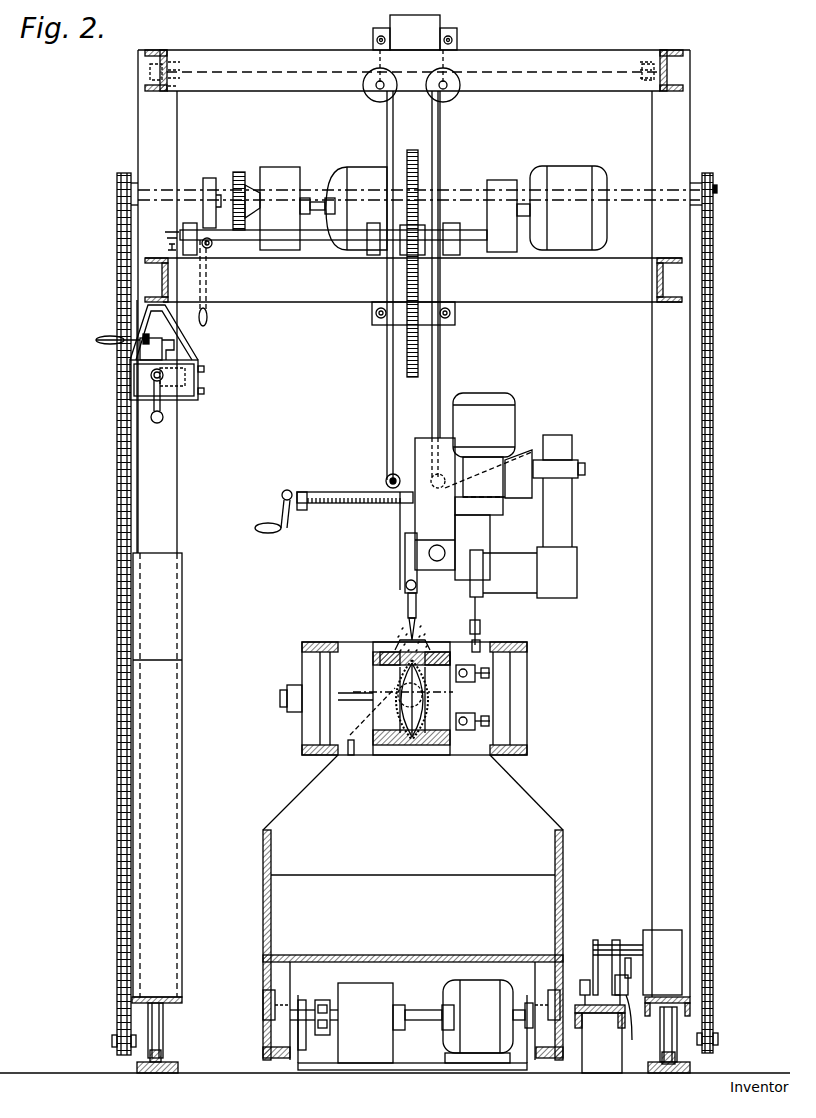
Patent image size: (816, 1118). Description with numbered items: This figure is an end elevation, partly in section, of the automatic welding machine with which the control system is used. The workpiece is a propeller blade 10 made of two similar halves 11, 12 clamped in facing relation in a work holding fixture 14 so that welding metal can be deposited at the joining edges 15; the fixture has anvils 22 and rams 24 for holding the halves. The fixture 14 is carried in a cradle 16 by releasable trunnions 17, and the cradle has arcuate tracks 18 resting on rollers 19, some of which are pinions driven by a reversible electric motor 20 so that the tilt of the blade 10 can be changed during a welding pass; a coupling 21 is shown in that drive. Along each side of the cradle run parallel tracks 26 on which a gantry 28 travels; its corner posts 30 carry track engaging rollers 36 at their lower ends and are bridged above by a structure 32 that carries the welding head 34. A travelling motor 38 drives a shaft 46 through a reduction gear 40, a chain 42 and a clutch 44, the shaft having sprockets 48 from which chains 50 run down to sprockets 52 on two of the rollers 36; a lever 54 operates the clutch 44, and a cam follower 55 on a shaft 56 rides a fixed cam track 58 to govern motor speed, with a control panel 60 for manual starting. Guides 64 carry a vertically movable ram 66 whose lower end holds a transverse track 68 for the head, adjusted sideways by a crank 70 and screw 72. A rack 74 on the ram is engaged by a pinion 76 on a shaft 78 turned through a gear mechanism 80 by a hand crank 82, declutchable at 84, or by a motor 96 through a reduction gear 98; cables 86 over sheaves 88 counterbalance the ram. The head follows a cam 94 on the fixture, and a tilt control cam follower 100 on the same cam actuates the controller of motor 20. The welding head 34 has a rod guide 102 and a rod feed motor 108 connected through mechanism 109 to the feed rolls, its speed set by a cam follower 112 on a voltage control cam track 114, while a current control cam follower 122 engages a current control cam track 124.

The propeller blade 10 is at (400, 641).
The blade half 11 is at (398, 748).
The blade half 12 is at (426, 748).
The work holding fixture 14 is at (528, 713).
The joining edges 15 is at (412, 753).
The cradle 16 is at (272, 916).
The fixture-holding releasable trunnions 17 is at (414, 709).
The arcuate tracks 18 is at (265, 1046).
The rollers 19 is at (263, 998).
The controllable reversible electric motor 20 is at (452, 992).
The coupling 21 is at (322, 1000).
The anvils 22 is at (380, 656).
The rams 24 is at (352, 697).
The parallel tracks 26 is at (155, 1073).
The gantry 28 is at (180, 472).
The corner posts 30 is at (177, 510).
The structure 32 is at (529, 58).
The welding head 34 is at (399, 567).
The track engaging rollers 36 is at (165, 1045).
The travelling motor 38 is at (360, 168).
The reduction gear 40 is at (282, 169).
The chain 42 is at (241, 174).
The clutch 44 is at (222, 176).
The shaft 46 is at (188, 190).
The sprockets 48 is at (120, 172).
The chains 50 is at (116, 293).
The sprockets 52 is at (120, 1046).
The lever 54 is at (208, 316).
The cam follower 55 is at (585, 980).
The shaft 56 is at (628, 945).
The cam track 58 is at (585, 1001).
The control panel 60 is at (170, 716).
The guides 64 is at (372, 33).
The vertically movable ram 66 is at (441, 137).
The transverse track 68 is at (357, 489).
The crank 70 is at (277, 531).
The screw 72 is at (334, 498).
The rack 74 is at (406, 363).
The pinion 76 is at (402, 243).
The shaft 78 is at (468, 234).
The gear mechanism 80 is at (150, 375).
The hand crank 82 is at (165, 418).
The declutching means 84 is at (196, 353).
The cables 86 is at (258, 75).
The sheaves 88 is at (188, 65).
The cam 94 is at (350, 754).
The motor 96 is at (583, 167).
The reduction gear 98 is at (498, 179).
The tilt control cam follower 100 is at (482, 628).
The welding rod guide 102 is at (407, 604).
The rod feed motor 108 is at (496, 393).
The mechanism 109 is at (450, 527).
The cam follower 112 is at (603, 944).
The voltage control cam track 114 is at (600, 1039).
The current control cam follower 122 is at (628, 980).
The current control cam track 124 is at (641, 1029).